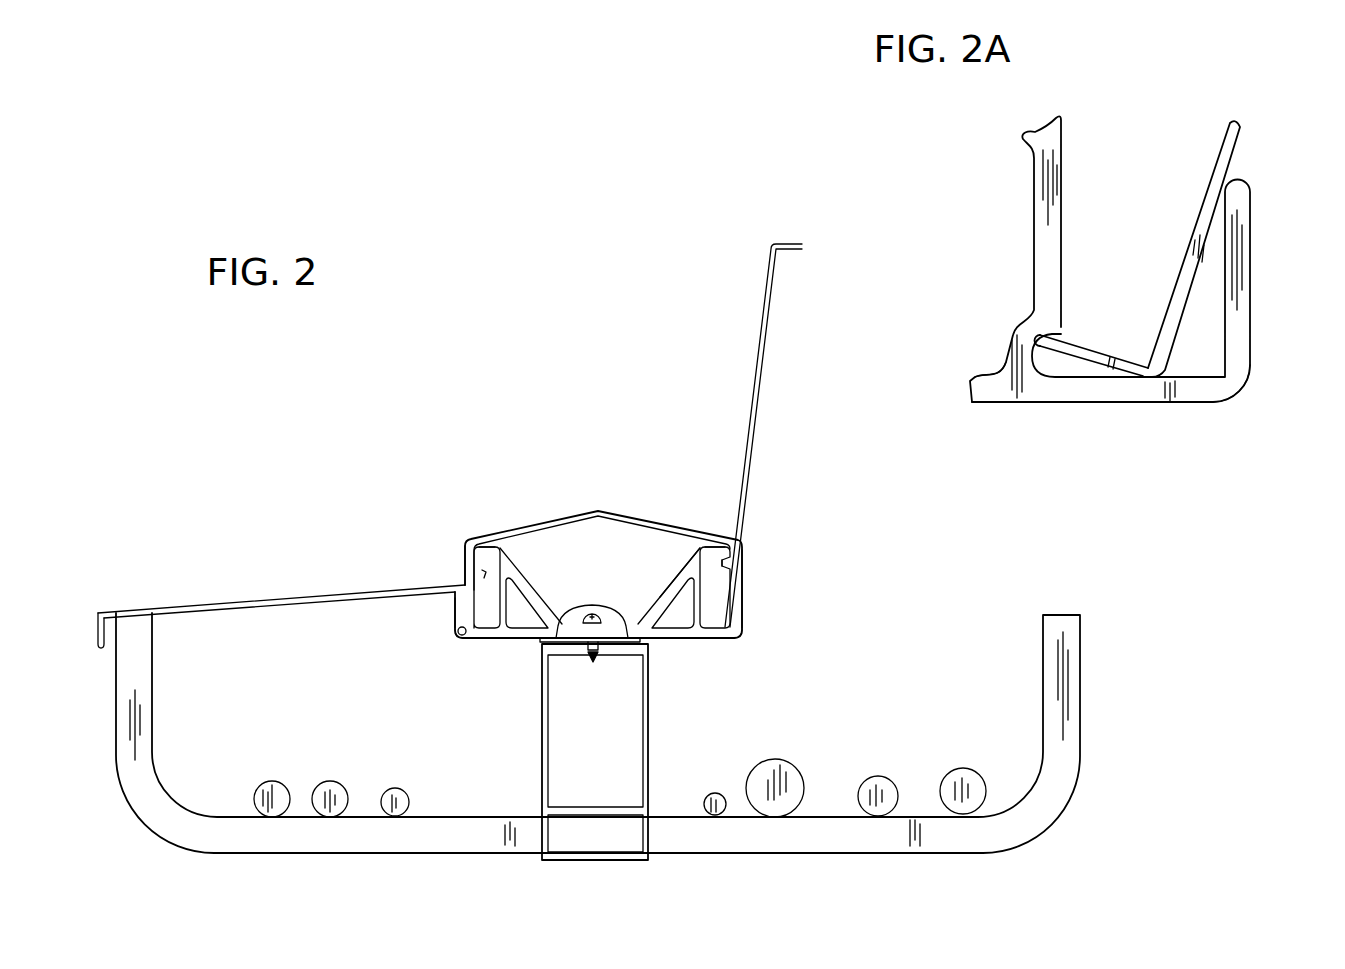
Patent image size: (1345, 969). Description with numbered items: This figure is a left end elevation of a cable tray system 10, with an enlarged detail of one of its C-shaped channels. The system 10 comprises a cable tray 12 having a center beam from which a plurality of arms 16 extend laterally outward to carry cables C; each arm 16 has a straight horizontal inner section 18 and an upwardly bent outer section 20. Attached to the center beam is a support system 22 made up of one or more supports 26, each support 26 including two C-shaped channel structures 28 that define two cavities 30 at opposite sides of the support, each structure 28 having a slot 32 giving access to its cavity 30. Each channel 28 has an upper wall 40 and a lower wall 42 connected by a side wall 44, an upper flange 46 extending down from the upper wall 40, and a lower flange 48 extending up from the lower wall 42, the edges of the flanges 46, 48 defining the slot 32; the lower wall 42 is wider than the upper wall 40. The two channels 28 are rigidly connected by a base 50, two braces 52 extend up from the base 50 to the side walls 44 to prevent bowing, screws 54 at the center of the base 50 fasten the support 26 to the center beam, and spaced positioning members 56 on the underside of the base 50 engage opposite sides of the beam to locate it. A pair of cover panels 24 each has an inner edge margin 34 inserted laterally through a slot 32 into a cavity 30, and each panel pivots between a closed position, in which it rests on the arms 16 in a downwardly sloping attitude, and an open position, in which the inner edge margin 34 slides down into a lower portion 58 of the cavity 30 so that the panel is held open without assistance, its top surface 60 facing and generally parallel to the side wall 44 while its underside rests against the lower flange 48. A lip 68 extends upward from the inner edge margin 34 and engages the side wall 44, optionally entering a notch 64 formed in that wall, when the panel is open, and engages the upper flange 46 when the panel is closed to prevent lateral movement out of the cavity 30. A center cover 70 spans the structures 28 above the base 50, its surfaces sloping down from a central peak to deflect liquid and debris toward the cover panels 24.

In FIG. 2, the cable tray system 10 is at (442, 490).
In FIG. 2, the cable tray 12 is at (650, 858).
In FIG. 2, the arm 16 is at (152, 637).
In FIG. 2, the inner section 18 is at (320, 842).
In FIG. 2, the outer section 20 is at (130, 672).
In FIG. 2, the support system 22 is at (445, 653).
In FIG. 2, the cover panel 24 is at (343, 592).
In FIG. 2A, the cover panel 24 is at (1230, 160).
In FIG. 2, the support 26 is at (740, 640).
In FIG. 2, the C-shaped channel structure 28 is at (508, 548).
In FIG. 2A, the C-shaped channel structure 28 is at (1232, 403).
In FIG. 2, the cavity 30 is at (505, 577).
In FIG. 2, the slot 32 is at (733, 572).
In FIG. 2, the inner edge margin 34 is at (470, 580).
In FIG. 2, the upper wall 40 is at (470, 540).
In FIG. 2, the lower wall 42 is at (466, 645).
In FIG. 2A, the lower wall 42 is at (1103, 405).
In FIG. 2, the side wall 44 is at (692, 590).
In FIG. 2A, the side wall 44 is at (1062, 192).
In FIG. 2, the upper flange 46 is at (464, 548).
In FIG. 2, the lower flange 48 is at (452, 604).
In FIG. 2A, the lower flange 48 is at (1251, 270).
In FIG. 2, the base 50 is at (515, 645).
In FIG. 2A, the base 50 is at (984, 405).
In FIG. 2, the brace 52 is at (596, 652).
In FIG. 2, the screw 54 is at (586, 660).
In FIG. 2, the positioning member 56 is at (653, 642).
In FIG. 2, the lower portion 58 is at (453, 629).
In FIG. 2, the top surface 60 is at (167, 610).
In FIG. 2, the notch 64 is at (528, 612).
In FIG. 2A, the notch 64 is at (1052, 333).
In FIG. 2, the lip 68 is at (690, 578).
In FIG. 2A, the lip 68 is at (1082, 345).
In FIG. 2, the center cover 70 is at (568, 515).
In FIG. 2, the cable C is at (392, 790).